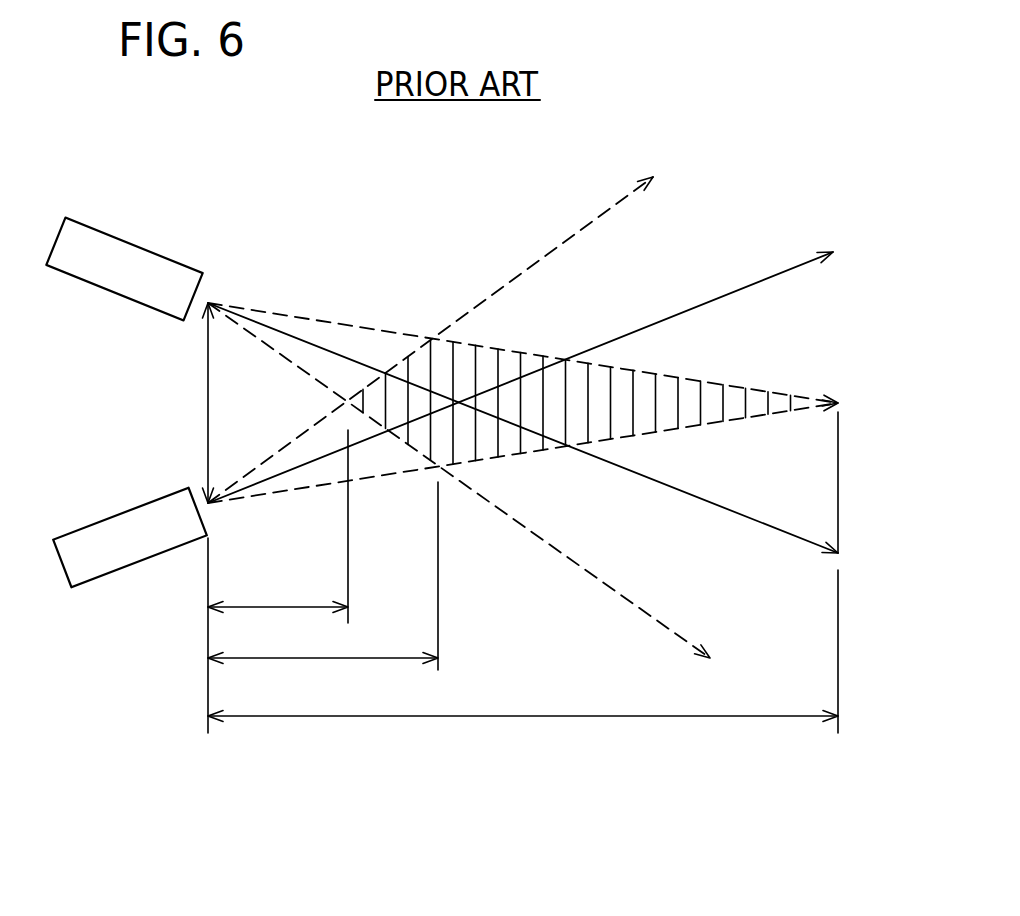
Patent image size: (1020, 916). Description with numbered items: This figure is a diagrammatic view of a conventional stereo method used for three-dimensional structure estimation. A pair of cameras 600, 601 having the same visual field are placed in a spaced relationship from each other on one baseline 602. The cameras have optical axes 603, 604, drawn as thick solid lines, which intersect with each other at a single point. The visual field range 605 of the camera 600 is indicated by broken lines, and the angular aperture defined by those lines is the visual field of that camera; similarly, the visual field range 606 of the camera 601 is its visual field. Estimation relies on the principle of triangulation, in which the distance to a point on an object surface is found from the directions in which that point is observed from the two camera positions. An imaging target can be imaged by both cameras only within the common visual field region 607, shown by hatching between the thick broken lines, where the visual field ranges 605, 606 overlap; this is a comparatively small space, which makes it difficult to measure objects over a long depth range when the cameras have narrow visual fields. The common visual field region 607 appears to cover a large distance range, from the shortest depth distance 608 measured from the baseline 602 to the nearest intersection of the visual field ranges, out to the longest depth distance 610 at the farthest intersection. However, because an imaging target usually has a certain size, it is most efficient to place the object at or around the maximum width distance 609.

The camera 600 is at (137, 244).
The camera 601 is at (130, 512).
The baseline 602 is at (207, 393).
The optical axis 603 is at (760, 527).
The optical axis 604 is at (705, 300).
The visual field range 605 is at (290, 363).
The visual field range 606 is at (628, 437).
The common visual field region 607 is at (693, 431).
The shortest depth distance 608 is at (290, 608).
The maximum width distance 609 is at (306, 659).
The longest depth distance 610 is at (467, 717).